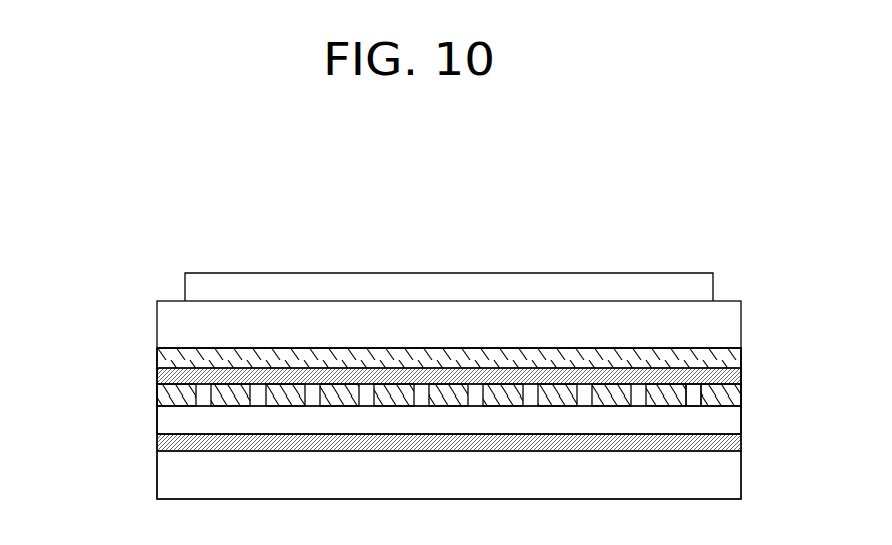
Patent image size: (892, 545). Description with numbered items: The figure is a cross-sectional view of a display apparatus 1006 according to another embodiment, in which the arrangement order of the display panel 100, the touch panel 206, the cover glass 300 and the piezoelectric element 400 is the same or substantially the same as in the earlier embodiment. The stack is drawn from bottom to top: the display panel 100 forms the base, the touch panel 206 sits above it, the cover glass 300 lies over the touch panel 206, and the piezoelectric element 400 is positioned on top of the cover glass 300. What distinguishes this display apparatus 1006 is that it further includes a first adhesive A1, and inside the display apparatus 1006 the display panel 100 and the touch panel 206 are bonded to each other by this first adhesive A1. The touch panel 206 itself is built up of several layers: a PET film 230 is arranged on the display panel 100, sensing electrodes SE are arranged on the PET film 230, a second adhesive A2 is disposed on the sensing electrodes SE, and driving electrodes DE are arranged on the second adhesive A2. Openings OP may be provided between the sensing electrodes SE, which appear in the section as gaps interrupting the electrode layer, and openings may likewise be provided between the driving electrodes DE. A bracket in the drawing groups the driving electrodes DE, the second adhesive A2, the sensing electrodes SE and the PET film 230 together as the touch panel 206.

The display apparatus 1006 is at (672, 220).
The piezoelectric element 400 is at (200, 284).
The cover glass 300 is at (167, 324).
The touch panel 206 is at (75, 348).
The driving electrodes DE is at (165, 355).
The second adhesive A2 is at (165, 377).
The sensing electrodes SE is at (165, 396).
The openings OP is at (693, 394).
The PET film 230 is at (165, 420).
The first adhesive A1 is at (735, 442).
The display panel 100 is at (165, 474).